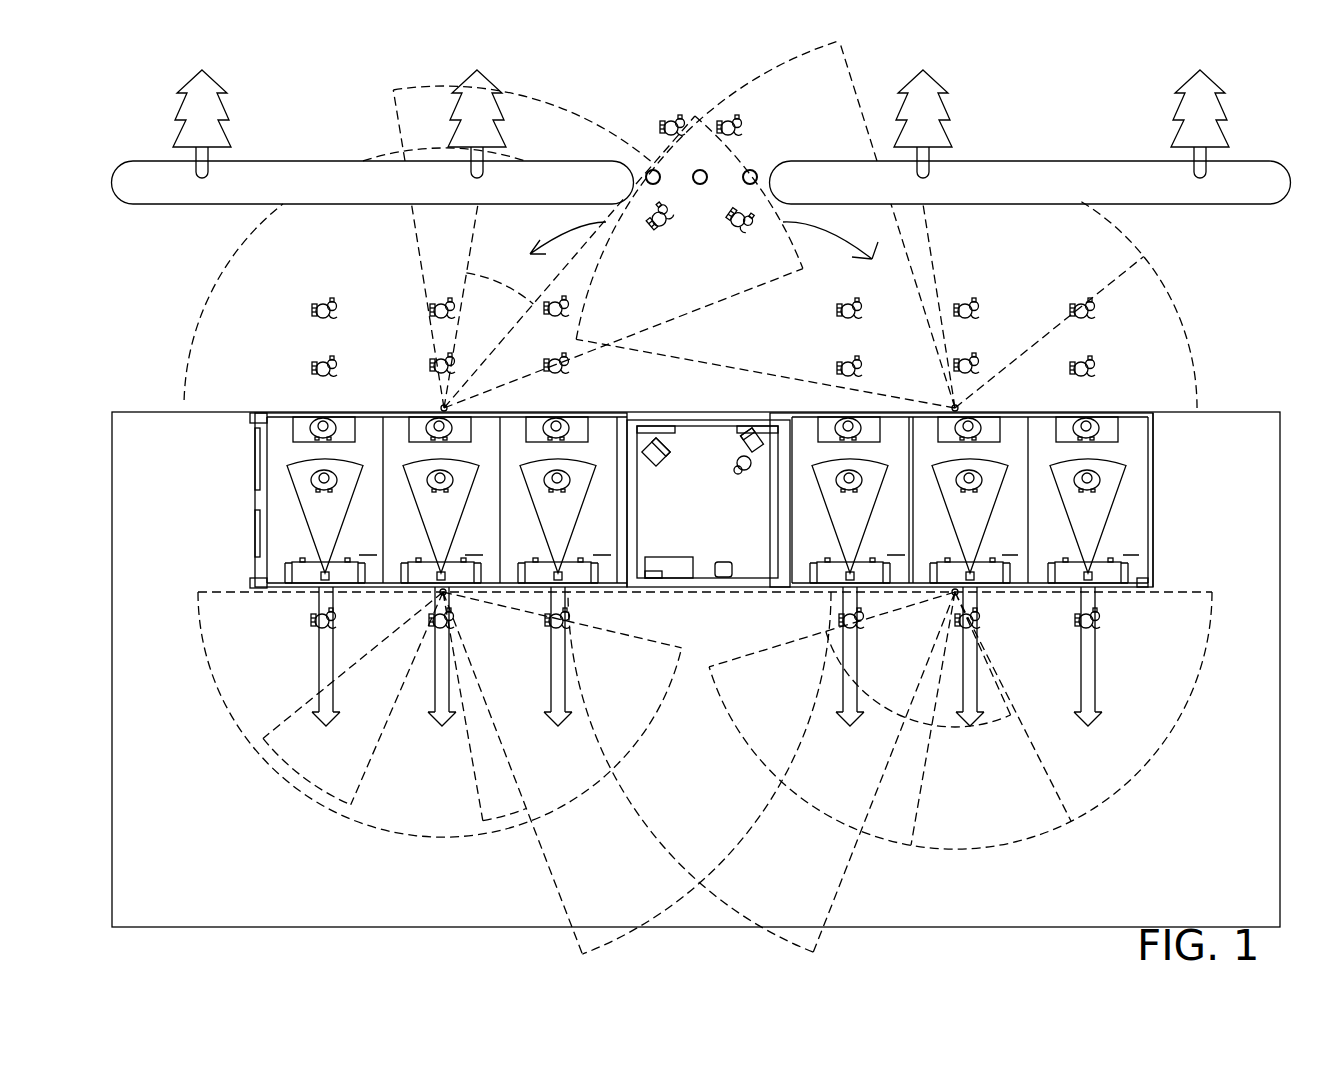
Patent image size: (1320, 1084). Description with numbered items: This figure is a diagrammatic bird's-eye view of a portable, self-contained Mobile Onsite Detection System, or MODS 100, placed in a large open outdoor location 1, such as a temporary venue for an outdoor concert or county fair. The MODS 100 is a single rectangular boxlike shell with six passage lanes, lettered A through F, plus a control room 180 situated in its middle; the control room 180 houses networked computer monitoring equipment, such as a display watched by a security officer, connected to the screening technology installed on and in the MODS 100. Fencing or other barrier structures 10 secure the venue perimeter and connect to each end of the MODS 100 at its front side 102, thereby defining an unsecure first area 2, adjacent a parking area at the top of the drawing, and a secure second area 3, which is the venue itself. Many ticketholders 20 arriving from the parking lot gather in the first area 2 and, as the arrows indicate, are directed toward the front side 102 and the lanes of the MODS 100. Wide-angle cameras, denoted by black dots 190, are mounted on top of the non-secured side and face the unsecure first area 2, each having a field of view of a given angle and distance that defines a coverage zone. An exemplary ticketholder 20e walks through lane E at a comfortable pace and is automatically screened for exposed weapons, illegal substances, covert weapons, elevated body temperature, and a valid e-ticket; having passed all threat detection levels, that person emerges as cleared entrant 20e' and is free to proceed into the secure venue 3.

The open outdoor location 1 is at (356, 241).
The unsecure first area 2 is at (710, 280).
The secure second area 3 is at (708, 794).
The fencing or barrier structures 10 is at (243, 410).
The ticketholders 20 is at (554, 302).
The exemplary ticketholder 20e is at (1006, 346).
The cleared entrant 20e' is at (1011, 639).
The Mobile Onsite Detection System (MODS) 100 is at (394, 412).
The front side 102 is at (1142, 410).
The control room 180 is at (714, 540).
The cameras 190 is at (443, 407).